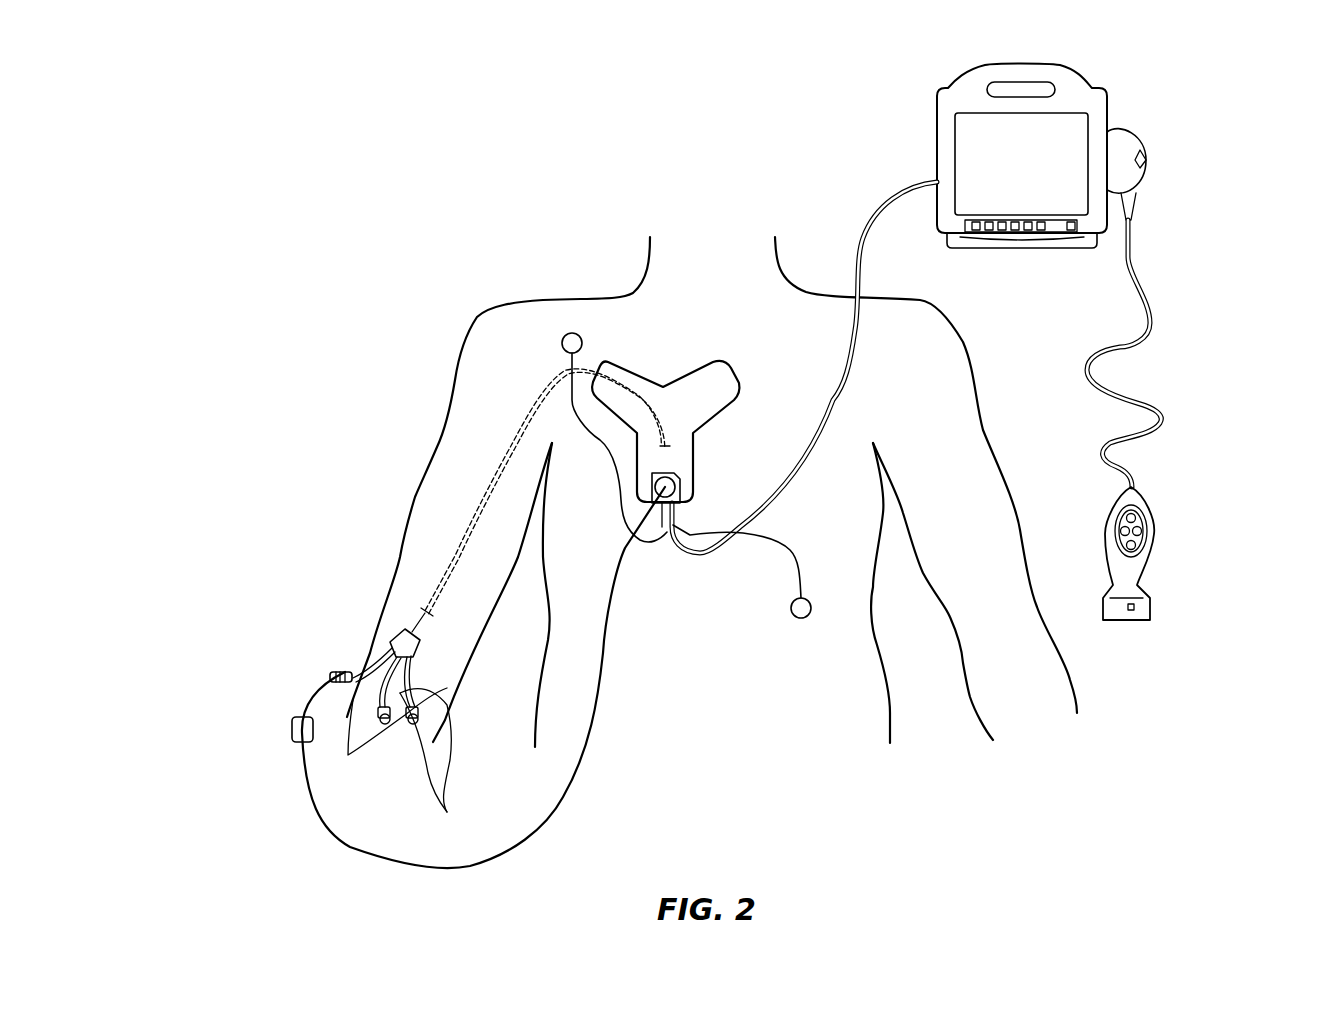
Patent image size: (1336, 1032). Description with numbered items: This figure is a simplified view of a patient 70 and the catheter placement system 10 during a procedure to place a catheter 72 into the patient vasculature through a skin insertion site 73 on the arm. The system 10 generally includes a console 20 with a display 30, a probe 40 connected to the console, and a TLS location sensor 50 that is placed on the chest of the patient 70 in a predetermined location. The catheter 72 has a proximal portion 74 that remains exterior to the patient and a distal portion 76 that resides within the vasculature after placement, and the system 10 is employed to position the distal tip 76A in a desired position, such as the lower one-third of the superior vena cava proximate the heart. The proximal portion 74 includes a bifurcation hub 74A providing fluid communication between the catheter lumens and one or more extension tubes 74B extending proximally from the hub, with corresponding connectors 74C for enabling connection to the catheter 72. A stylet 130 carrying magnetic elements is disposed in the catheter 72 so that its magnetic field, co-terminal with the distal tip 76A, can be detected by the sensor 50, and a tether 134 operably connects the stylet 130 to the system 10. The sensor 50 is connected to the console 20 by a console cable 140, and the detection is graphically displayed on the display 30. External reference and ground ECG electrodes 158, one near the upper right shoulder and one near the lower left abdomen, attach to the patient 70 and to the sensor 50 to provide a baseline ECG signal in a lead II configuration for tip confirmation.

The system 10 is at (1186, 239).
The console 20 is at (1088, 98).
The display 30 is at (967, 143).
The probe 40 is at (1152, 525).
The sensor 50 is at (737, 372).
The patient 70 is at (538, 297).
The catheter 72 is at (414, 614).
The skin insertion site 73 is at (427, 610).
The proximal portion 74 is at (372, 653).
The bifurcation hub 74A is at (420, 650).
The extension tubes 74B is at (375, 722).
The connectors 74C is at (333, 675).
The distal portion 76 is at (624, 399).
The distal tip 76A is at (667, 445).
The stylet 130 is at (286, 727).
The tether 134 is at (598, 697).
The console cable 140 is at (860, 237).
The ECG electrodes 158 is at (593, 393).